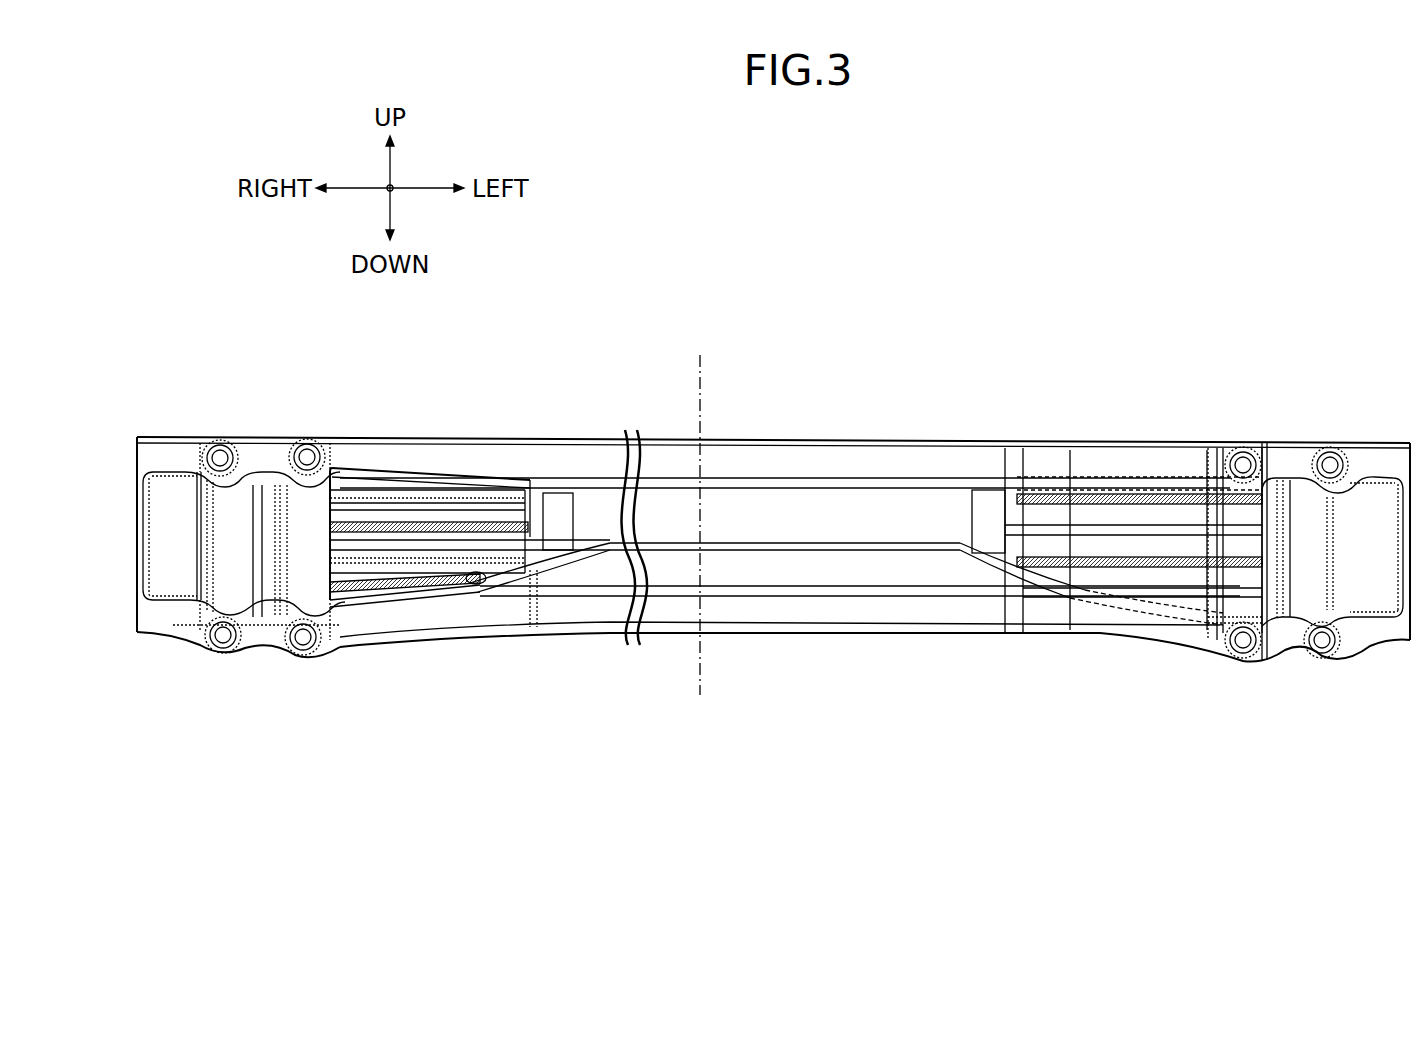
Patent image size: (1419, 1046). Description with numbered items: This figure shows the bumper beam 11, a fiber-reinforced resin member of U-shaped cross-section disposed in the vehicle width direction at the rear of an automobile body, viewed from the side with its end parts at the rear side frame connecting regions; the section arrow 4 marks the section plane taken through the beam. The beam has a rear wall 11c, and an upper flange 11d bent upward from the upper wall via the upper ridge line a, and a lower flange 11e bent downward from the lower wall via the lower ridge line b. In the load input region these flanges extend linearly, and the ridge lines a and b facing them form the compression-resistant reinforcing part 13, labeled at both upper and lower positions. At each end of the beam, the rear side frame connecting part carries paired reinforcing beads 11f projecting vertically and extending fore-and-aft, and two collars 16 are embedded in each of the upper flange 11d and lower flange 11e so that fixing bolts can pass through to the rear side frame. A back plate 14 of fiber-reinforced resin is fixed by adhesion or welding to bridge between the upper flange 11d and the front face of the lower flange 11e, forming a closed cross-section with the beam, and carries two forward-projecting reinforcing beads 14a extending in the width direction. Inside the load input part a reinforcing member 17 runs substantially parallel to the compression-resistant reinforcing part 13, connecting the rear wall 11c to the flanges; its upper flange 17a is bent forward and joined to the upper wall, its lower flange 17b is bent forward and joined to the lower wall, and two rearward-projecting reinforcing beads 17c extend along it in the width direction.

The section line of FIG. 4 is at (1043, 334).
The bumper beam 11 is at (773, 506).
The rear wall 11c is at (762, 498).
The upper flange 11d is at (915, 465).
The lower flange 11e is at (872, 615).
The reinforcing bead 11f is at (305, 602).
The compression-resistant reinforcing part 13 is at (517, 498).
The back plate 14 is at (866, 511).
The reinforcing bead 14a is at (1082, 513).
The collar 16 is at (307, 448).
The reinforcing member 17 is at (796, 535).
The upper flange 17a is at (383, 470).
The lower flange 17b is at (383, 600).
The reinforcing bead 17c is at (403, 503).